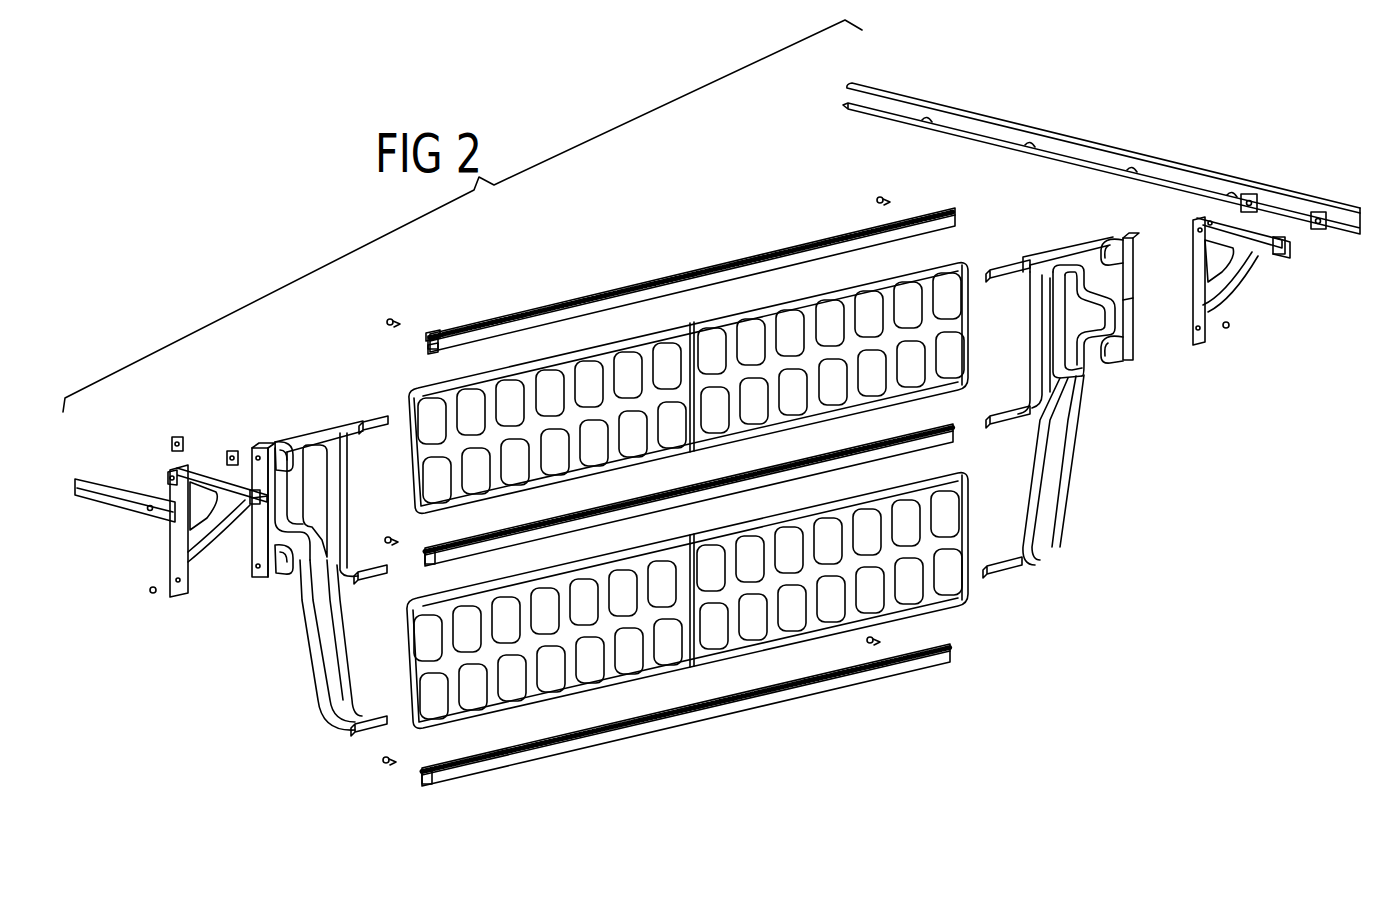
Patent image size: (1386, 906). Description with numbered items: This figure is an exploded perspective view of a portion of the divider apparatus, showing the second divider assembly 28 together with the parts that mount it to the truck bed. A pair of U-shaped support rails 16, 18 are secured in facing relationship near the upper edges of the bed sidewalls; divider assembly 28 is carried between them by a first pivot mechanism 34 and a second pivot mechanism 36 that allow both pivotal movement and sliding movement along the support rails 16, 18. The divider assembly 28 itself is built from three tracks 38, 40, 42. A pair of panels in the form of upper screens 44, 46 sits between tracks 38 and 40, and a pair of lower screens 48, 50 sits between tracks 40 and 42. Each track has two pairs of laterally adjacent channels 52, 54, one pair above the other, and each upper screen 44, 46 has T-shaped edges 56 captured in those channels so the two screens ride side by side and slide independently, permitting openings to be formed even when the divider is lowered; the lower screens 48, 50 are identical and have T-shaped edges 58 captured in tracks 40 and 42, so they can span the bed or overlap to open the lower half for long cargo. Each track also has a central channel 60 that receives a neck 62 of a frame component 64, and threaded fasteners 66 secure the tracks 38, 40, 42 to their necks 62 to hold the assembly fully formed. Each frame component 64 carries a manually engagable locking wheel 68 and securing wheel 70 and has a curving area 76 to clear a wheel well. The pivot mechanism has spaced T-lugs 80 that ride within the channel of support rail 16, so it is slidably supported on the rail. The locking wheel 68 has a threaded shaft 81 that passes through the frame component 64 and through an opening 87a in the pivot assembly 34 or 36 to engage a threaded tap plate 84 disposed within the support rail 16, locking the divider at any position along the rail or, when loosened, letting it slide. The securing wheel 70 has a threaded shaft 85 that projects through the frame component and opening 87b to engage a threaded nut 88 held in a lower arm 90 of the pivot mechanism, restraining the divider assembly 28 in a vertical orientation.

The support rail 16 is at (1070, 137).
The support rail 18 is at (110, 494).
The second divider assembly 28 is at (671, 368).
The first pivot mechanism 34 is at (203, 596).
The second pivot mechanism 36 is at (1250, 311).
The track 38 is at (682, 272).
The track 40 is at (958, 442).
The track 42 is at (675, 629).
The upper screen 44 is at (605, 410).
The upper screen 46 is at (823, 355).
The lower screen 48 is at (568, 690).
The lower screen 50 is at (773, 640).
The channel 52 is at (425, 338).
The channel 54 is at (432, 348).
The T-shaped edge 56 is at (408, 387).
The T-shaped edge 58 is at (407, 604).
The central channel 60 is at (420, 776).
The neck 62 is at (390, 432).
The frame component 64 is at (318, 690).
The threaded fastener 66 is at (877, 197).
The locking wheel 68 is at (275, 446).
The securing wheel 70 is at (286, 576).
The curving area 76 is at (1073, 390).
The T-lug 80 is at (172, 476).
The threaded shaft 81 is at (250, 453).
The threaded tap plate 84 is at (1258, 192).
The threaded shaft 85 is at (250, 592).
The opening 87a is at (1197, 235).
The opening 87b is at (1290, 258).
The threaded nut 88 is at (152, 586).
The lower arm 90 is at (1197, 346).